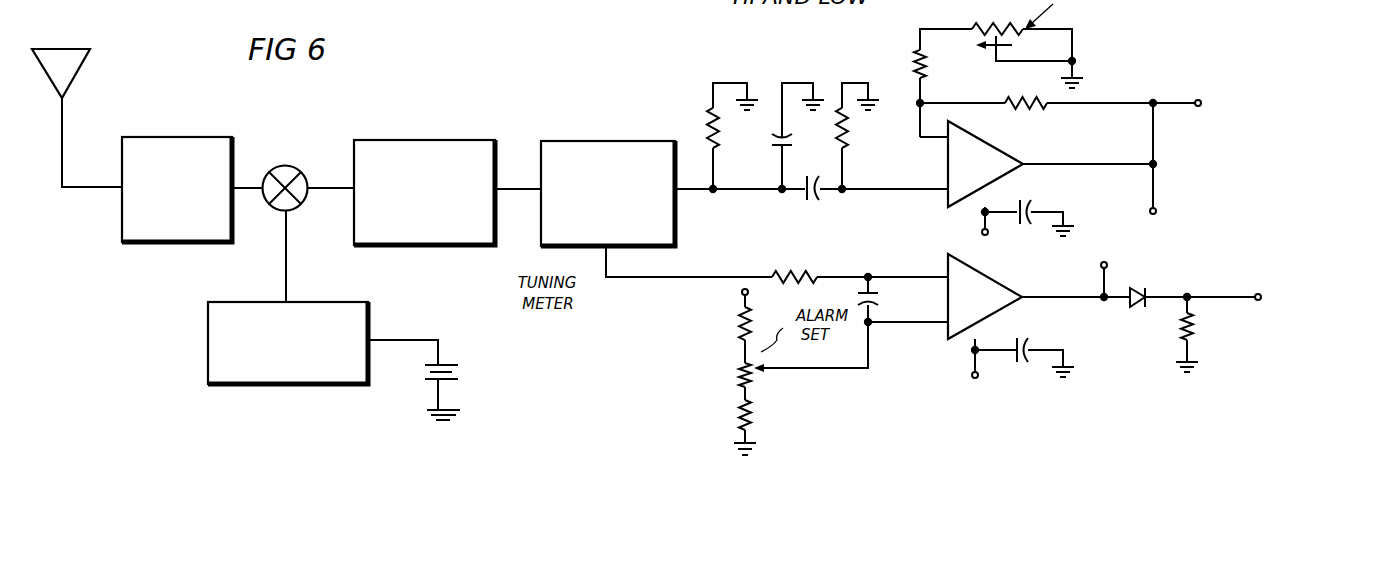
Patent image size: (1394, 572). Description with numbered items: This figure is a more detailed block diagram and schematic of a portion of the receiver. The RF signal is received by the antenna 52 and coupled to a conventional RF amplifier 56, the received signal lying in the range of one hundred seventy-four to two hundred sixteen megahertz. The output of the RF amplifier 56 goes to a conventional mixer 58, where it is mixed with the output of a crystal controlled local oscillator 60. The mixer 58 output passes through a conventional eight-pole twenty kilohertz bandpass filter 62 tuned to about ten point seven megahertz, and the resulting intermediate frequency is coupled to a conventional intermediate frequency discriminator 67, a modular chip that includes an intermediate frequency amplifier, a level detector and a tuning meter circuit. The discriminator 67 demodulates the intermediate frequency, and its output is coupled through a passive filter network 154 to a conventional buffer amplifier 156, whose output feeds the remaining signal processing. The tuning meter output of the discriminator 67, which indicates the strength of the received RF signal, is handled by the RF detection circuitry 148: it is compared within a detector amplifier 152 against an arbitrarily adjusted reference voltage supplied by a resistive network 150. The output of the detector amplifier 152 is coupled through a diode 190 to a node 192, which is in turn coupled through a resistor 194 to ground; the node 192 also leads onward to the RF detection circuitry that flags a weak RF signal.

The antenna 52 is at (82, 63).
The RF amplifier 56 is at (208, 116).
The mixer 58 is at (292, 205).
The local oscillator 60 is at (208, 330).
The bandpass filter 62 is at (464, 140).
The intermediate frequency discriminator 67 is at (588, 141).
The RF detection circuitry 148 is at (716, 338).
The resistive network 150 is at (784, 395).
The detector amplifier 152 is at (997, 282).
The passive filter network 154 is at (780, 209).
The buffer amplifier 156 is at (997, 143).
The diode 190 is at (1134, 288).
The node 192 is at (1189, 289).
The resistor 194 is at (1192, 341).